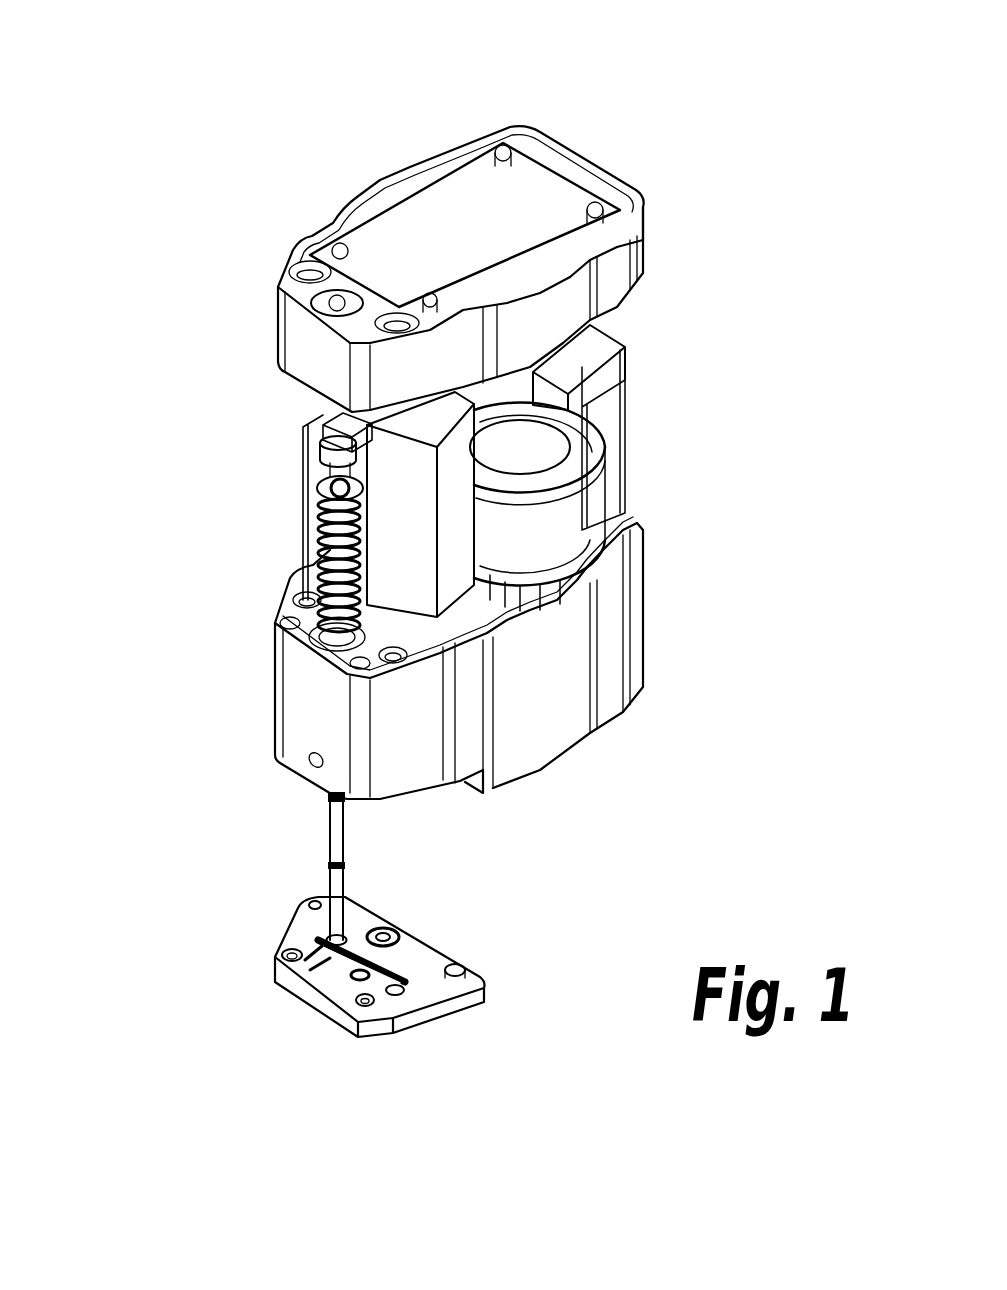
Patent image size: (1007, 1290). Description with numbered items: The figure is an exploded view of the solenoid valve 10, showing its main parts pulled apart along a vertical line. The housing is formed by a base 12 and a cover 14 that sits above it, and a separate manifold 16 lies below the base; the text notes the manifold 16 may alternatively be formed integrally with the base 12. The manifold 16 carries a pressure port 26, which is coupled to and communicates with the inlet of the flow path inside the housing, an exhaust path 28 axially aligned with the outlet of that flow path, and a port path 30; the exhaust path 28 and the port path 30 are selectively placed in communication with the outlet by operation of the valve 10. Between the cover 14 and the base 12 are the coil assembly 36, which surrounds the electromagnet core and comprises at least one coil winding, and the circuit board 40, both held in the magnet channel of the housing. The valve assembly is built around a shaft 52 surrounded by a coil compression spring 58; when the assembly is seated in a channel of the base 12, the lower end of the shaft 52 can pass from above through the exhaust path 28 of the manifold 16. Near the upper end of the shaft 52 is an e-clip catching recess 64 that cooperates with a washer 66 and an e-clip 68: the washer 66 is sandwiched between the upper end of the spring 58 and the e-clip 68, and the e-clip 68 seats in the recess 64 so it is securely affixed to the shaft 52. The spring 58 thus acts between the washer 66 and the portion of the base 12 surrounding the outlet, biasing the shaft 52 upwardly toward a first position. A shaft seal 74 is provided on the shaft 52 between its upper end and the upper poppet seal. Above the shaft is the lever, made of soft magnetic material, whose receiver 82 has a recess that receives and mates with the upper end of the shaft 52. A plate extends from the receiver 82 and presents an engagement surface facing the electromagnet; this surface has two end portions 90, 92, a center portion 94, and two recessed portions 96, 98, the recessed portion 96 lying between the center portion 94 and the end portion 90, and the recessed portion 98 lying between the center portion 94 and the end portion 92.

The solenoid valve 10 is at (269, 187).
The base 12 is at (578, 747).
The cover 14 is at (439, 214).
The manifold 16 is at (464, 1057).
The pressure port 26 is at (407, 933).
The exhaust path 28 is at (317, 987).
The port path 30 is at (372, 1008).
The coil assembly 36 is at (522, 488).
The circuit board 40 is at (563, 557).
The shaft 52 is at (278, 830).
The coil compression spring 58 is at (261, 568).
The e-clip catching recess 64 is at (340, 802).
The washer 66 is at (322, 493).
The e-clip 68 is at (333, 470).
The shaft seal 74 is at (343, 863).
The receiver 82 is at (343, 436).
The end portion 90 is at (605, 378).
The end portion 92 is at (343, 428).
The center portion 94 is at (500, 397).
The recessed portion 96 is at (552, 380).
The recessed portion 98 is at (392, 383).